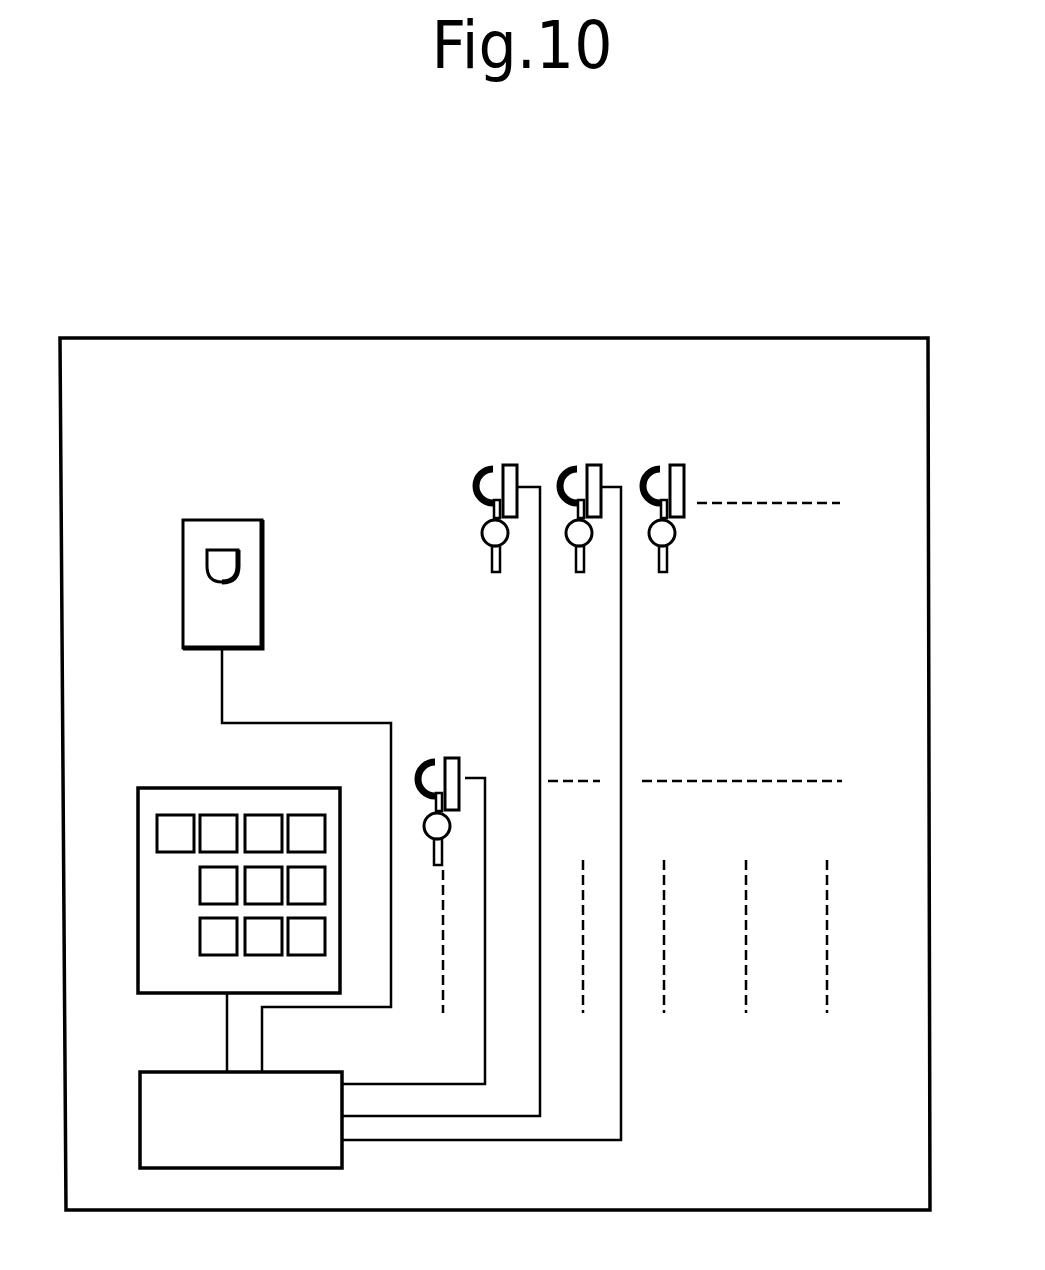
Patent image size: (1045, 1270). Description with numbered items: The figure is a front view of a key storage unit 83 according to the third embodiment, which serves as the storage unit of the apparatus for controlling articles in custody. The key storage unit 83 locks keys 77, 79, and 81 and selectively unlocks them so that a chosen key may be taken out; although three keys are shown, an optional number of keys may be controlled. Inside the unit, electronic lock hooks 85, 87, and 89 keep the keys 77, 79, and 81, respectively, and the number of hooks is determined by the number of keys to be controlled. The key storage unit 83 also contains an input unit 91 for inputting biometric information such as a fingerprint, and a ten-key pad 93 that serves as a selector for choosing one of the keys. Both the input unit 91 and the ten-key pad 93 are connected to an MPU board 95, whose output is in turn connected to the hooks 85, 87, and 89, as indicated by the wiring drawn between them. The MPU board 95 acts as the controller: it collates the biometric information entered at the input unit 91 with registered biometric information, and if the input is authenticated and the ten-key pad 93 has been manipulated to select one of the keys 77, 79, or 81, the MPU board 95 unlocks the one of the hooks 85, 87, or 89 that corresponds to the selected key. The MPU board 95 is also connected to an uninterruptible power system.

The key storage unit 83 is at (776, 337).
The electronic lock hook 85 is at (503, 462).
The electronic lock hook 87 is at (586, 462).
The electronic lock hook 89 is at (669, 462).
The key 77 is at (508, 542).
The key 79 is at (592, 542).
The key 81 is at (675, 542).
The input unit 91 is at (262, 575).
The ten-key pad 93 is at (160, 787).
The MPU board 95 is at (140, 1095).